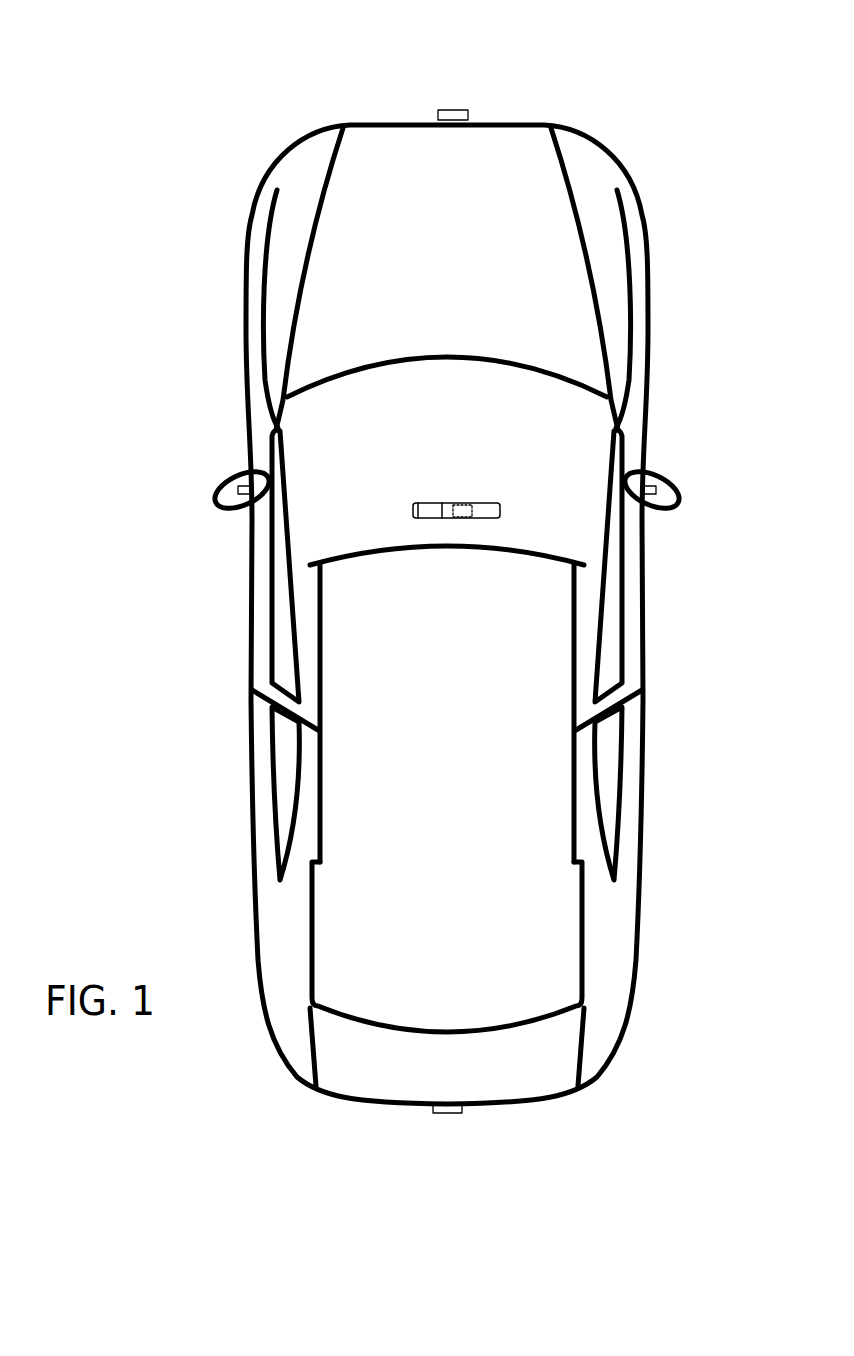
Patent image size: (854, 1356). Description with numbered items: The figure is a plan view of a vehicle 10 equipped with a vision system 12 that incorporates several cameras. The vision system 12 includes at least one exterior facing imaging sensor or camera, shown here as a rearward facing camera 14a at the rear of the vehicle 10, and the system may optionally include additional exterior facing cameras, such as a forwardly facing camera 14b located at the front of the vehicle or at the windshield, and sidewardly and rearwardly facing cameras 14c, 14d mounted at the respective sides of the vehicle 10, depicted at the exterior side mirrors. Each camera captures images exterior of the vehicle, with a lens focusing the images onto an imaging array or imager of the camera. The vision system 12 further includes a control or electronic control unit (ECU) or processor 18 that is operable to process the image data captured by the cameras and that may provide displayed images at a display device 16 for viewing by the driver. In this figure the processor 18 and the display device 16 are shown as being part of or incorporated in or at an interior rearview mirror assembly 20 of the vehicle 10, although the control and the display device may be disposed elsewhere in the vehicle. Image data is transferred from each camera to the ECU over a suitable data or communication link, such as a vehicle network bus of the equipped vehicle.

The vehicle 10 is at (198, 215).
The vision system 12 is at (397, 1135).
The rearward facing camera 14a is at (450, 1112).
The forwardly facing camera 14b is at (457, 108).
The sidewardly/rearwardly facing camera 14c is at (237, 483).
The sidewardly/rearwardly facing camera 14d is at (657, 483).
The display device 16 is at (430, 505).
The electronic control unit 18 is at (453, 503).
The interior rearview mirror assembly 20 is at (500, 504).